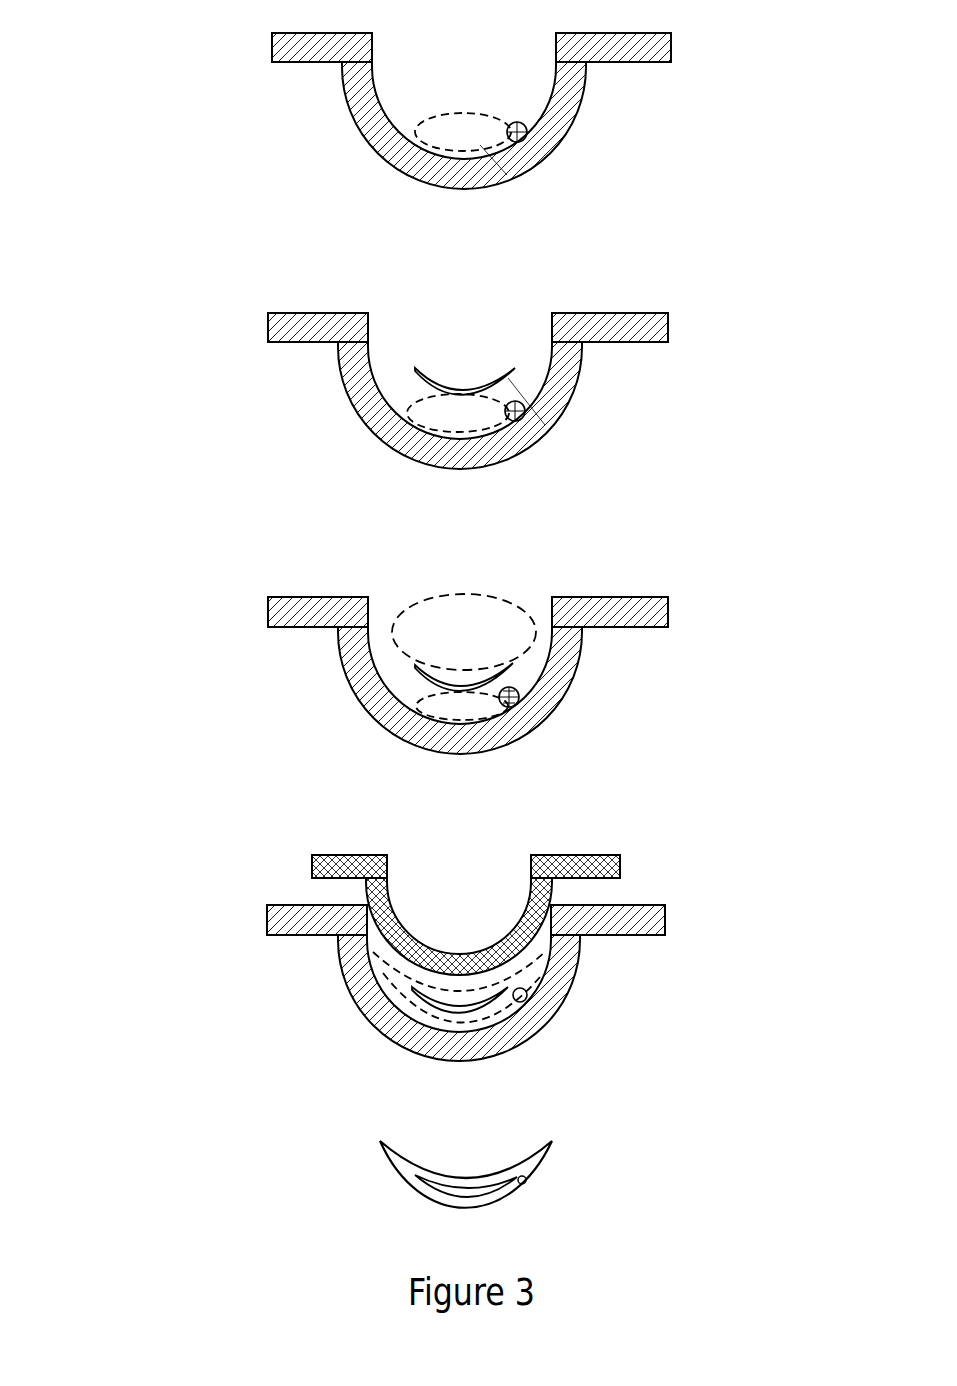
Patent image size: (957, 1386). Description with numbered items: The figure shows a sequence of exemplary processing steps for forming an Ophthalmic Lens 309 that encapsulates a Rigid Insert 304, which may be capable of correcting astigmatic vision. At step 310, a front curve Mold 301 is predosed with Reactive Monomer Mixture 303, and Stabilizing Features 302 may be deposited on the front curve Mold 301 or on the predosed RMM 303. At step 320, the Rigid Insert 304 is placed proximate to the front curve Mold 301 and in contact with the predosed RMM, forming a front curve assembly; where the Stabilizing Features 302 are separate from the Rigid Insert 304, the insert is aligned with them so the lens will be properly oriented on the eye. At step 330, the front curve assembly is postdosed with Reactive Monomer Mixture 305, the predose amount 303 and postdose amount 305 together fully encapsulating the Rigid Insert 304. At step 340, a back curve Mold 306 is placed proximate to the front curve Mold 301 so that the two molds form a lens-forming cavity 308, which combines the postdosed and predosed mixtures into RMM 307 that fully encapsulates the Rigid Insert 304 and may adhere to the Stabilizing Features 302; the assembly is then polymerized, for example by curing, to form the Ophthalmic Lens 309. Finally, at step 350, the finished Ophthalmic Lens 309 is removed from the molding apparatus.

The front curve Mold 301 is at (272, 48).
The Stabilizing Features 302 is at (520, 123).
The Reactive Monomer Mixture 303 is at (528, 177).
The Rigid Insert 304 is at (560, 423).
The Reactive Monomer Mixture 305 is at (525, 637).
The back curve Mold 306 is at (312, 862).
The RMM 307 is at (521, 987).
The lens-forming cavity 308 is at (375, 937).
The Ophthalmic Lens 309 is at (556, 1150).
The predosing step 310 is at (419, 126).
The insert placement step 320 is at (382, 390).
The postdosing step 330 is at (375, 670).
The mold closing step 340 is at (421, 936).
The lens removal step 350 is at (382, 1142).